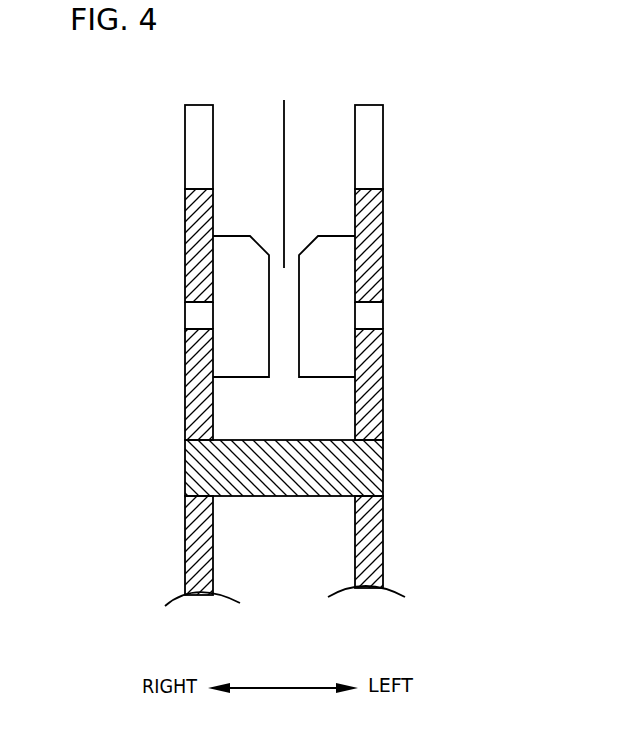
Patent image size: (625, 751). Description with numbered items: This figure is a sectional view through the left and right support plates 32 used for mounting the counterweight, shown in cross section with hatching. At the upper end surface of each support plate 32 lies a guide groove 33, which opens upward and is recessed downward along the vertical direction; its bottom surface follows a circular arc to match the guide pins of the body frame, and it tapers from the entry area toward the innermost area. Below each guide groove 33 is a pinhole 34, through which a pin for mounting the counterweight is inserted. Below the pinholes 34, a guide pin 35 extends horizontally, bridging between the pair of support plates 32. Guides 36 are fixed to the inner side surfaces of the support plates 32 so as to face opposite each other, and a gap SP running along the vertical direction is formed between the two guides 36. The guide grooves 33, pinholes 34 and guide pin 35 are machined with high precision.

The support plate 32 is at (185, 549).
The guide groove 33 is at (212, 188).
The pinhole 34 is at (213, 329).
The guide pin 35 is at (383, 467).
The guide 36 is at (248, 285).
The gap SP is at (279, 171).